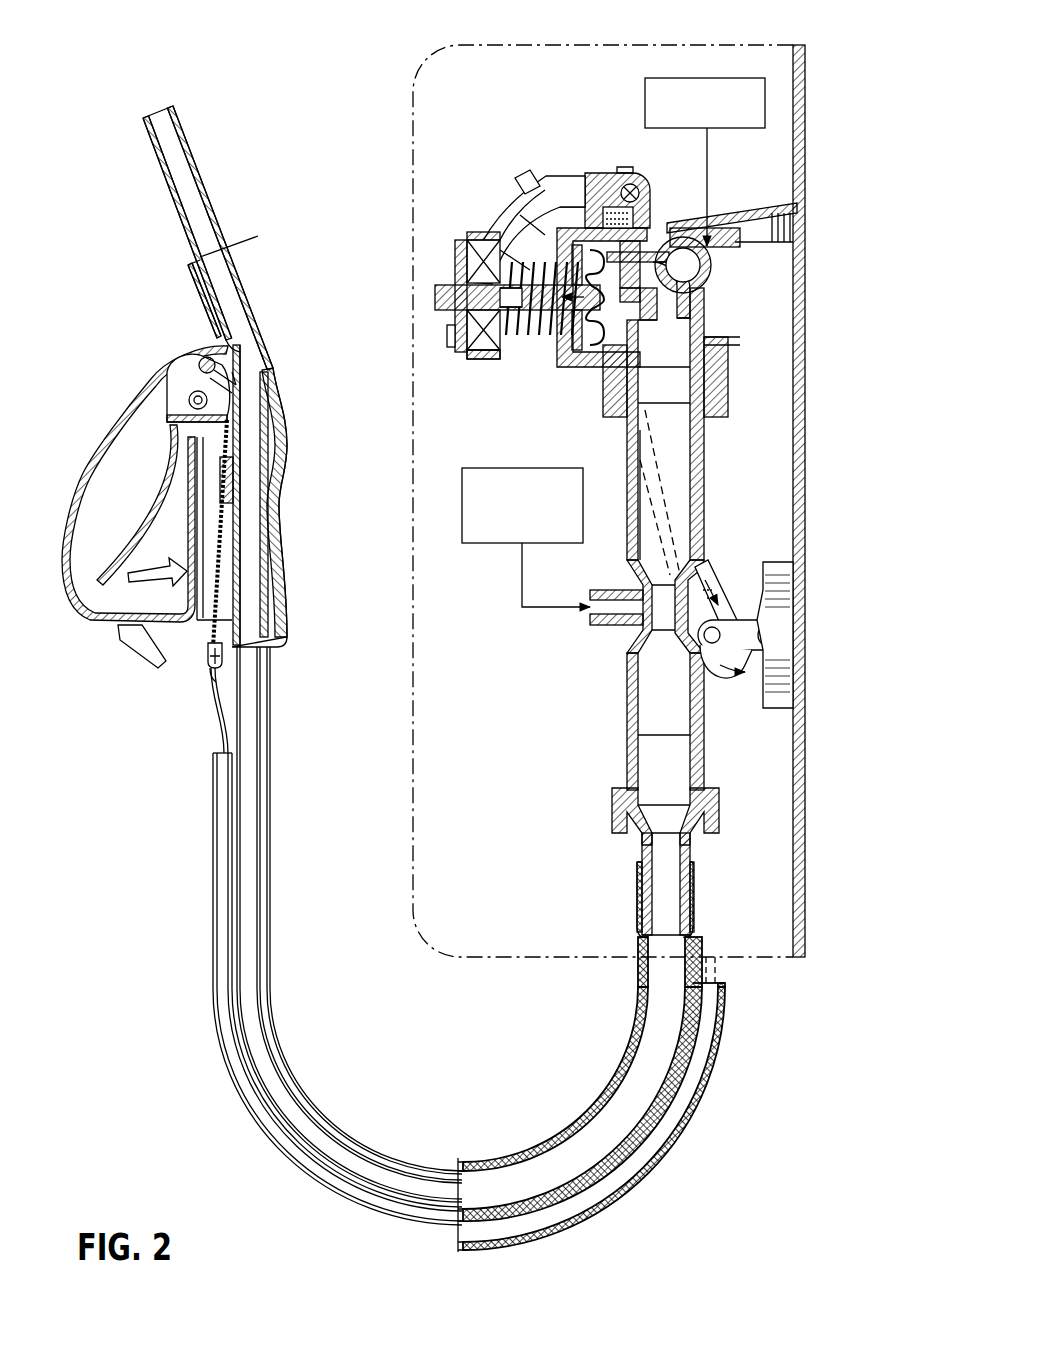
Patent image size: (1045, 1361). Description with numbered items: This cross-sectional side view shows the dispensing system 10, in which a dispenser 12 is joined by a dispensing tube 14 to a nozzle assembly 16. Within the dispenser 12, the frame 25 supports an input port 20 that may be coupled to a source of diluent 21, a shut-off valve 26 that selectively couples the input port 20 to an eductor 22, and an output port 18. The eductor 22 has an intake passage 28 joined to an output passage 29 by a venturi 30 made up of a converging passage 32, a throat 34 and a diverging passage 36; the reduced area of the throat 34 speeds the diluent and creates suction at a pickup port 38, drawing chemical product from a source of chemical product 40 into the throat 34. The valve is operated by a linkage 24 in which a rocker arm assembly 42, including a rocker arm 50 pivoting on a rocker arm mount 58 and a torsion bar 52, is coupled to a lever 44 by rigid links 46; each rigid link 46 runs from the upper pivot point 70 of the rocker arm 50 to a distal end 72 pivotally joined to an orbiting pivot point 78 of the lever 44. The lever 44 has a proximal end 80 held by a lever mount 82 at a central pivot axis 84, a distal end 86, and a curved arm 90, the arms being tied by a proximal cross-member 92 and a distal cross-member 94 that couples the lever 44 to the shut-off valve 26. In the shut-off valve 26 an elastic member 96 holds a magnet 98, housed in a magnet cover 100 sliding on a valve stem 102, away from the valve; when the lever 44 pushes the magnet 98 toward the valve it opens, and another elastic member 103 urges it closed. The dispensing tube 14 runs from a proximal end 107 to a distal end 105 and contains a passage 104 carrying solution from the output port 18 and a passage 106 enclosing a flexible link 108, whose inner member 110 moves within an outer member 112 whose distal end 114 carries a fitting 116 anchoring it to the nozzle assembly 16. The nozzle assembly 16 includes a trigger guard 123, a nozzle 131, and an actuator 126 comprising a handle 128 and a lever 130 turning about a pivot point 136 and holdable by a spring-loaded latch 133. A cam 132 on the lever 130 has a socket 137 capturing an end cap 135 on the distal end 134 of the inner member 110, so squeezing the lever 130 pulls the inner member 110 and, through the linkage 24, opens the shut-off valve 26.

The dispensing system 10 is at (142, 1120).
The dispenser 12 is at (410, 122).
The dispensing tube 14 is at (340, 1112).
The nozzle assembly 16 is at (300, 402).
The output port 18 is at (650, 808).
The input port 20 is at (690, 268).
The source of diluent 21 is at (645, 94).
The eductor 22 is at (620, 582).
The linkage 24 is at (508, 138).
The frame 25 is at (800, 128).
The shut-off valve 26 is at (590, 368).
The intake passage 28 is at (679, 431).
The output passage 29 is at (662, 733).
The venturi 30 is at (632, 636).
The converging passage 32 is at (667, 575).
The throat 34 is at (662, 622).
The diverging passage 36 is at (670, 652).
The pickup port 38 is at (590, 612).
The source of chemical product 40 is at (470, 470).
The rocker arm assembly 42 is at (732, 612).
The lever 44 is at (478, 222).
The rigid links 46 is at (648, 398).
The rocker arm 50 is at (714, 645).
The torsion bar 52 is at (780, 630).
The rocker arm mount 58 is at (783, 676).
The upper pivot point 70 is at (714, 644).
The distal end 72 is at (572, 180).
The orbiting pivot point 78 is at (566, 182).
The proximal end 80 is at (604, 175).
The lever mount 82 is at (652, 190).
The central pivot axis 84 is at (630, 184).
The distal end 86 is at (452, 348).
The arm 90 is at (503, 196).
The proximal cross-member 92 is at (526, 180).
The distal cross-member 94 is at (452, 340).
The elastic member 96 is at (541, 338).
The magnet 98 is at (470, 268).
The magnet cover 100 is at (488, 360).
The valve stem 102 is at (433, 297).
The elastic member 103 is at (470, 292).
The passage 104 is at (513, 1178).
The distal end 105 is at (271, 655).
The passage 106 is at (568, 1205).
The proximal end 107 is at (637, 912).
The flexible link 108 is at (215, 738).
The inner member 110 is at (225, 580).
The outer member 112 is at (220, 720).
The distal end 114 is at (207, 678).
The fitting 116 is at (223, 655).
The trigger guard 123 is at (102, 456).
The actuator 126 is at (120, 532).
The handle 128 is at (283, 582).
The lever 130 is at (145, 504).
The nozzle 131 is at (207, 200).
The cam 132 is at (182, 390).
The spring-loaded latch 133 is at (136, 650).
The distal end 134 is at (250, 396).
The end cap 135 is at (216, 366).
The pivot point 136 is at (196, 390).
The socket 137 is at (214, 362).